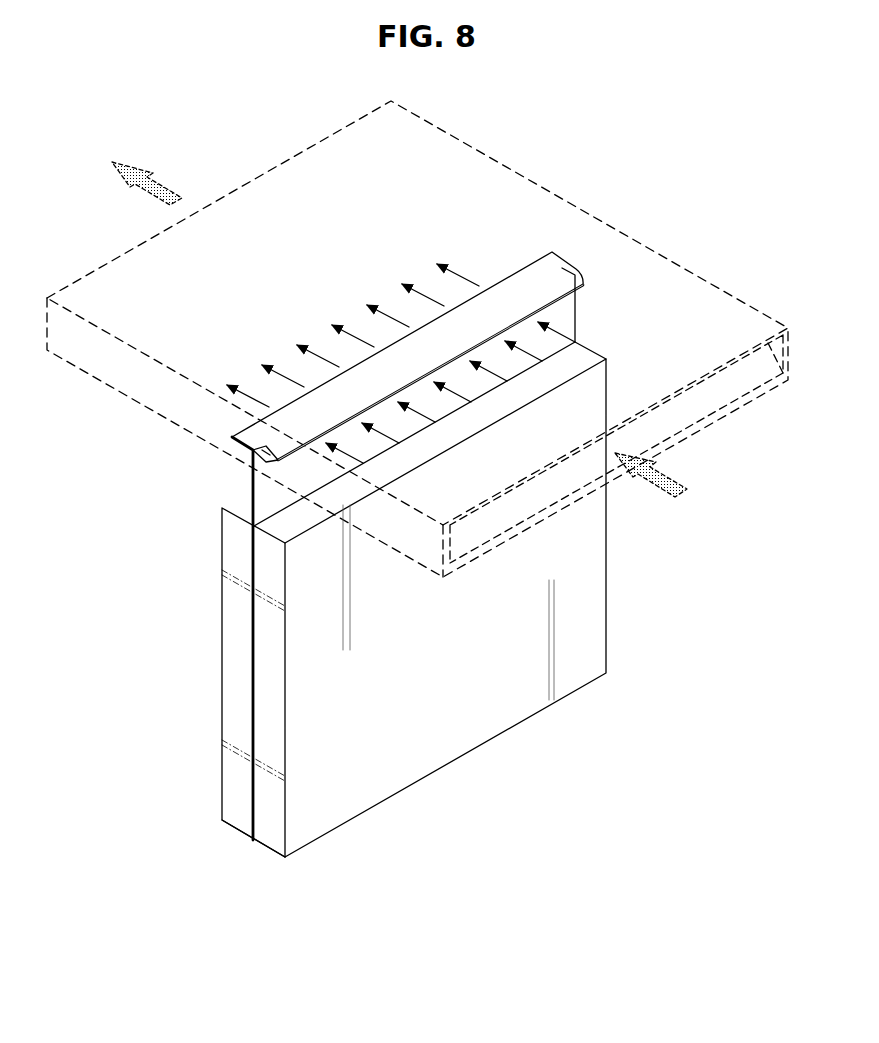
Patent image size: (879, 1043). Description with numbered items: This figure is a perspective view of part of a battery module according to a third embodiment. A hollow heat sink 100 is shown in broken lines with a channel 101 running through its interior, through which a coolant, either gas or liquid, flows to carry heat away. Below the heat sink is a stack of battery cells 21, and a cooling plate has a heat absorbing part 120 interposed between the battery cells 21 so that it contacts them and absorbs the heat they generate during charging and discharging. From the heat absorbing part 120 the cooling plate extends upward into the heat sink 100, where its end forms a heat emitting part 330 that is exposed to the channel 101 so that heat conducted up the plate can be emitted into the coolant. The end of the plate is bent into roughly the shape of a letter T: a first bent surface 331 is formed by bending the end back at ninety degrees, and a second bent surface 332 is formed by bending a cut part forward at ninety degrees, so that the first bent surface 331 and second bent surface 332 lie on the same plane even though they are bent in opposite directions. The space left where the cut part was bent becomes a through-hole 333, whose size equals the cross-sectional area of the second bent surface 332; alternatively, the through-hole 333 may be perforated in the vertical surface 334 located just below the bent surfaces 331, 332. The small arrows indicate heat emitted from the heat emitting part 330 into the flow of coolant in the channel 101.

The heat sink 100 is at (698, 272).
The channel 101 is at (740, 392).
The heat absorbing part 120 is at (254, 614).
The battery cells 21 is at (272, 832).
The heat emitting part 330 is at (397, 515).
The first bent surface 331 is at (240, 440).
The second bent surface 332 is at (575, 292).
The through-hole 333 is at (272, 468).
The vertical surface 334 is at (272, 457).